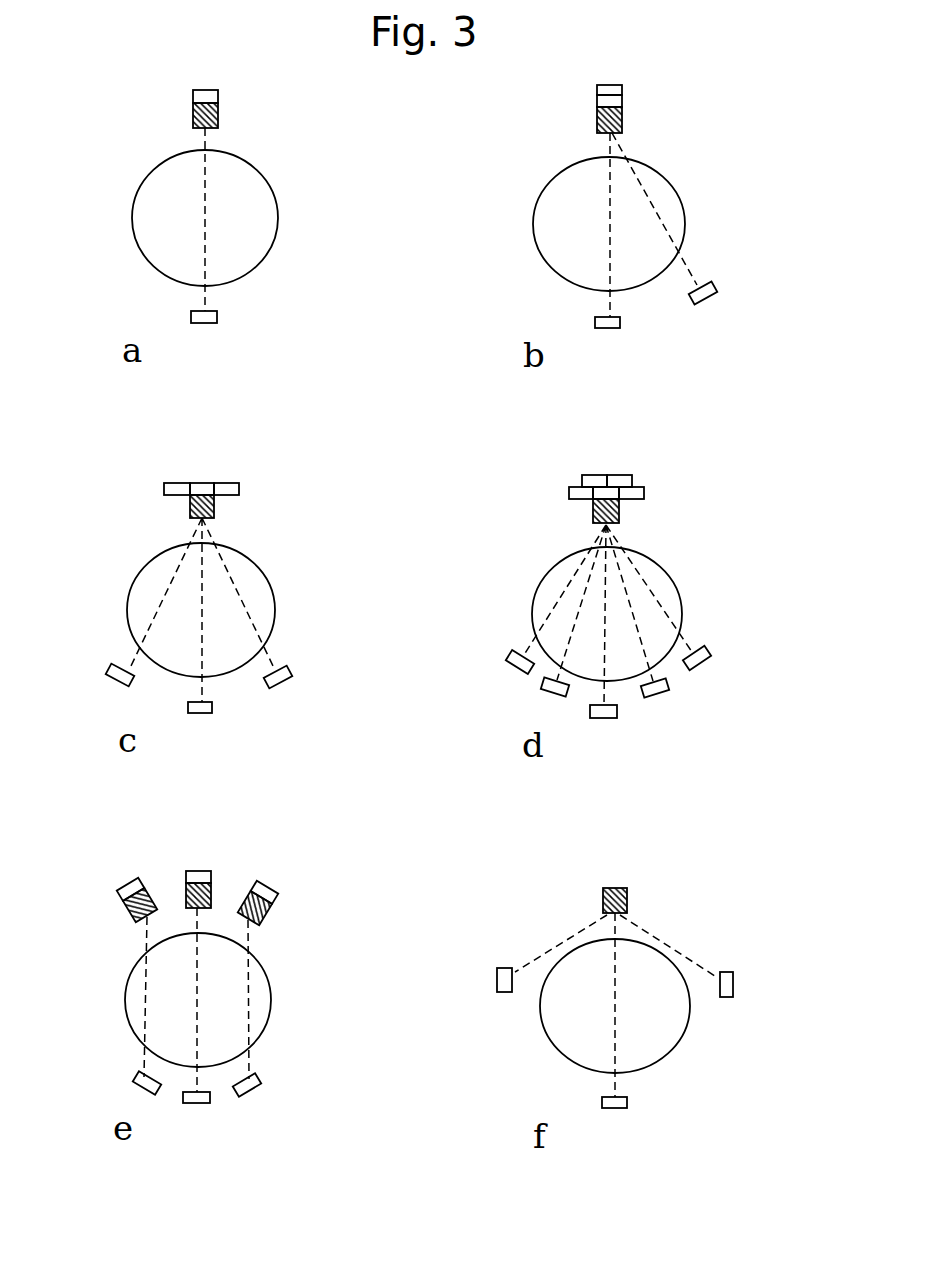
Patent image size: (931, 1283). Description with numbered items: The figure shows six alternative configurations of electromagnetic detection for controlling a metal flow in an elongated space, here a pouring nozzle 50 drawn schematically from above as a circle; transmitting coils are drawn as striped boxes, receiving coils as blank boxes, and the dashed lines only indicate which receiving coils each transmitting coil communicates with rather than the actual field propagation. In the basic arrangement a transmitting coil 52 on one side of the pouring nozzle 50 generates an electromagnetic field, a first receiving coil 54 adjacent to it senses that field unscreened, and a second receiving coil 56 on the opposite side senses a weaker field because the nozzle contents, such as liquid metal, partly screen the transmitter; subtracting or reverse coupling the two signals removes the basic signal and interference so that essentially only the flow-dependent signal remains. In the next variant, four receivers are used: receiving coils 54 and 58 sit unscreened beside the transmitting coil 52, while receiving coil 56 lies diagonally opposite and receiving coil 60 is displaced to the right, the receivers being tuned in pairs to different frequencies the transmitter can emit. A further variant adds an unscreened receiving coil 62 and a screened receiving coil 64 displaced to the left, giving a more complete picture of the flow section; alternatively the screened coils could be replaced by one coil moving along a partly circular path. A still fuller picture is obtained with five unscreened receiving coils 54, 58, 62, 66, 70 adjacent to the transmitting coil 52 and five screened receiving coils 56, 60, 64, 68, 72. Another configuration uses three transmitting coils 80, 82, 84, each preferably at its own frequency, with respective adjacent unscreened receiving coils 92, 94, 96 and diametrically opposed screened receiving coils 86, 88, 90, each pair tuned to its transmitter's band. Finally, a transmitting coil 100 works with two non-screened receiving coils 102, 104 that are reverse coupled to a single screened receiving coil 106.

In FIG. 3a, the pouring nozzle 50 is at (278, 220).
In FIG. 3b, the pouring nozzle 50 is at (685, 210).
In FIG. 3c, the pouring nozzle 50 is at (275, 603).
In FIG. 3d, the pouring nozzle 50 is at (680, 598).
In FIG. 3e, the pouring nozzle 50 is at (272, 990).
In FIG. 3f, the pouring nozzle 50 is at (677, 1038).
In FIG. 3a, the transmitting coil 52 is at (193, 103).
In FIG. 3b, the transmitting coil 52 is at (597, 118).
In FIG. 3c, the transmitting coil 52 is at (190, 510).
In FIG. 3d, the transmitting coil 52 is at (593, 513).
In FIG. 3a, the first receiving coil 54 is at (218, 92).
In FIG. 3b, the first receiving coil 54 is at (622, 93).
In FIG. 3c, the first receiving coil 54 is at (207, 483).
In FIG. 3d, the first receiving coil 54 is at (612, 495).
In FIG. 3a, the second receiving coil 56 is at (217, 313).
In FIG. 3b, the second receiving coil 56 is at (620, 320).
In FIG. 3c, the second receiving coil 56 is at (212, 712).
In FIG. 3d, the second receiving coil 56 is at (613, 718).
In FIG. 3b, the receiving coil 58 is at (597, 85).
In FIG. 3c, the receiving coil 58 is at (165, 483).
In FIG. 3d, the receiving coil 58 is at (569, 492).
In FIG. 3b, the second receiving coil 60 is at (713, 287).
In FIG. 3c, the second receiving coil 60 is at (288, 678).
In FIG. 3d, the second receiving coil 60 is at (710, 660).
In FIG. 3c, the receiving coil 62 is at (237, 483).
In FIG. 3d, the receiving coil 62 is at (644, 493).
In FIG. 3c, the screened receiving coil 64 is at (117, 665).
In FIG. 3d, the screened receiving coil 64 is at (508, 657).
In FIG. 3d, the receiving coil 66 is at (583, 475).
In FIG. 3d, the receiving coil 68 is at (667, 692).
In FIG. 3d, the receiving coil 70 is at (630, 475).
In FIG. 3d, the receiving coil 72 is at (563, 695).
In FIG. 3e, the transmitting coil 80 is at (125, 908).
In FIG. 3e, the transmitting coil 82 is at (186, 883).
In FIG. 3e, the transmitting coil 84 is at (273, 897).
In FIG. 3e, the receiving coil 86 is at (247, 1092).
In FIG. 3e, the receiving coil 88 is at (202, 1103).
In FIG. 3e, the receiving coil 90 is at (137, 1078).
In FIG. 3e, the receiving coil 92 is at (132, 884).
In FIG. 3e, the receiving coil 94 is at (202, 871).
In FIG. 3e, the receiving coil 96 is at (258, 883).
In FIG. 3f, the transmitting coil 100 is at (628, 893).
In FIG. 3f, the non-screened receiving coil 102 is at (502, 992).
In FIG. 3f, the non-screened receiving coil 104 is at (732, 973).
In FIG. 3f, the screened receiving coil 106 is at (620, 1108).